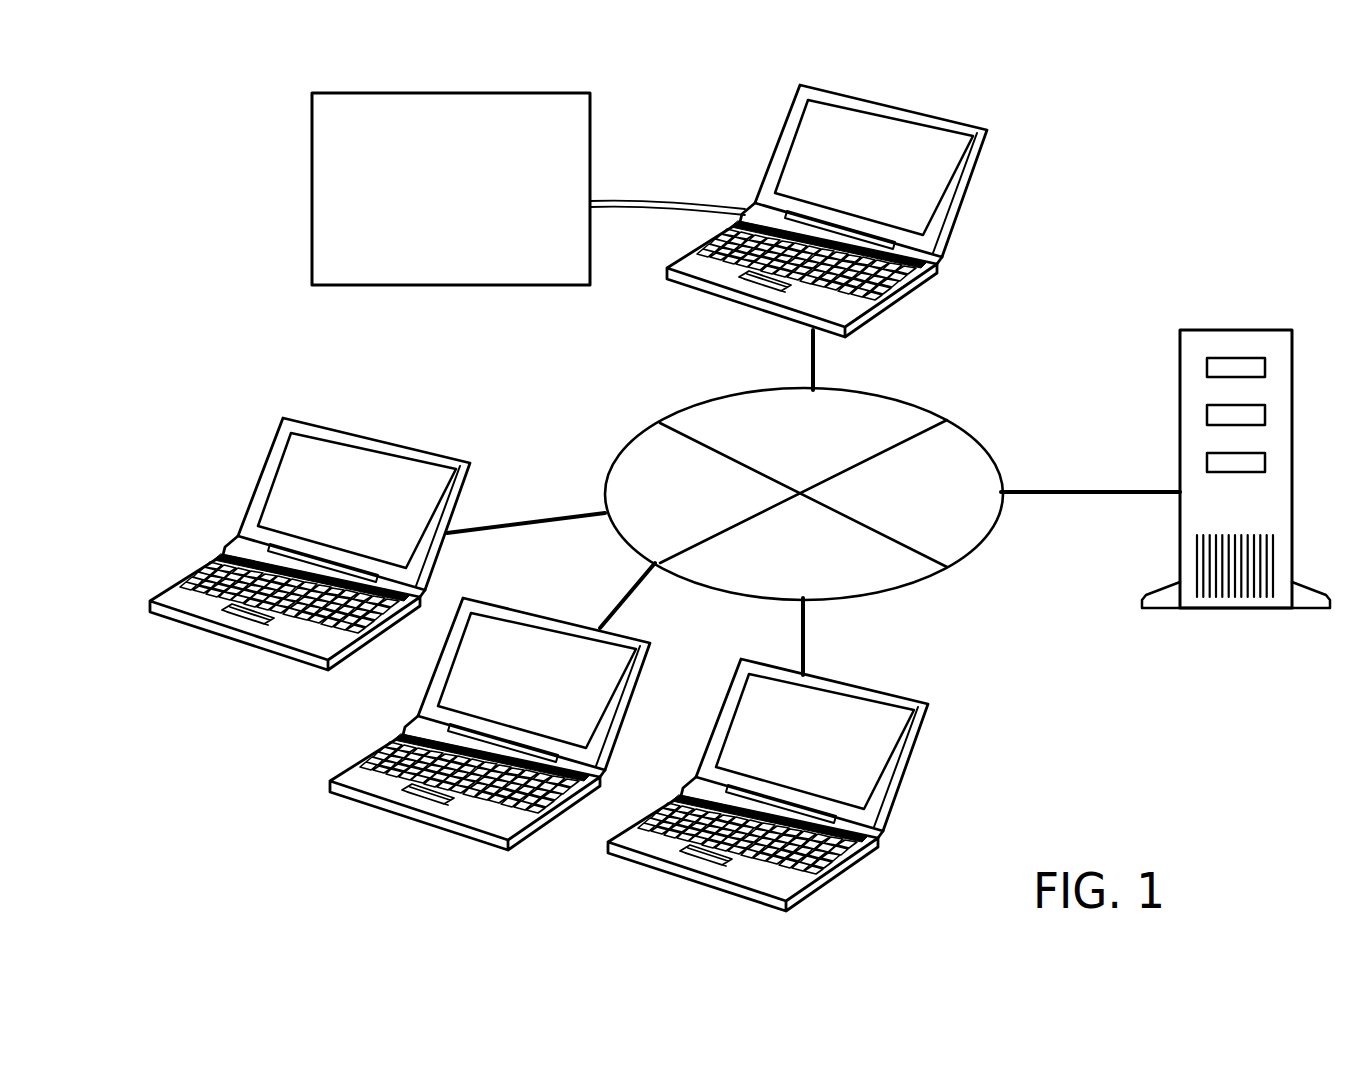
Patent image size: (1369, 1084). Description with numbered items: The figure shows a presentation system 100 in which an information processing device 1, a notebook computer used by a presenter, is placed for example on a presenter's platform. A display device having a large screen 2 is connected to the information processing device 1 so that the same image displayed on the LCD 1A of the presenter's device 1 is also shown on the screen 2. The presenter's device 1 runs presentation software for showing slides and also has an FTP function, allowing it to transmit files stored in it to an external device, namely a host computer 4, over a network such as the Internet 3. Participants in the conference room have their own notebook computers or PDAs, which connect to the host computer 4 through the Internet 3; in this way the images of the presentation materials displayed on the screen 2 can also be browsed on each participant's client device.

The information processing device 1 is at (852, 211).
The LCD 1A is at (930, 160).
The screen 2 is at (577, 135).
The Internet 3 is at (633, 441).
The host computer 4 is at (1240, 330).
The presentation system 100 is at (1035, 662).